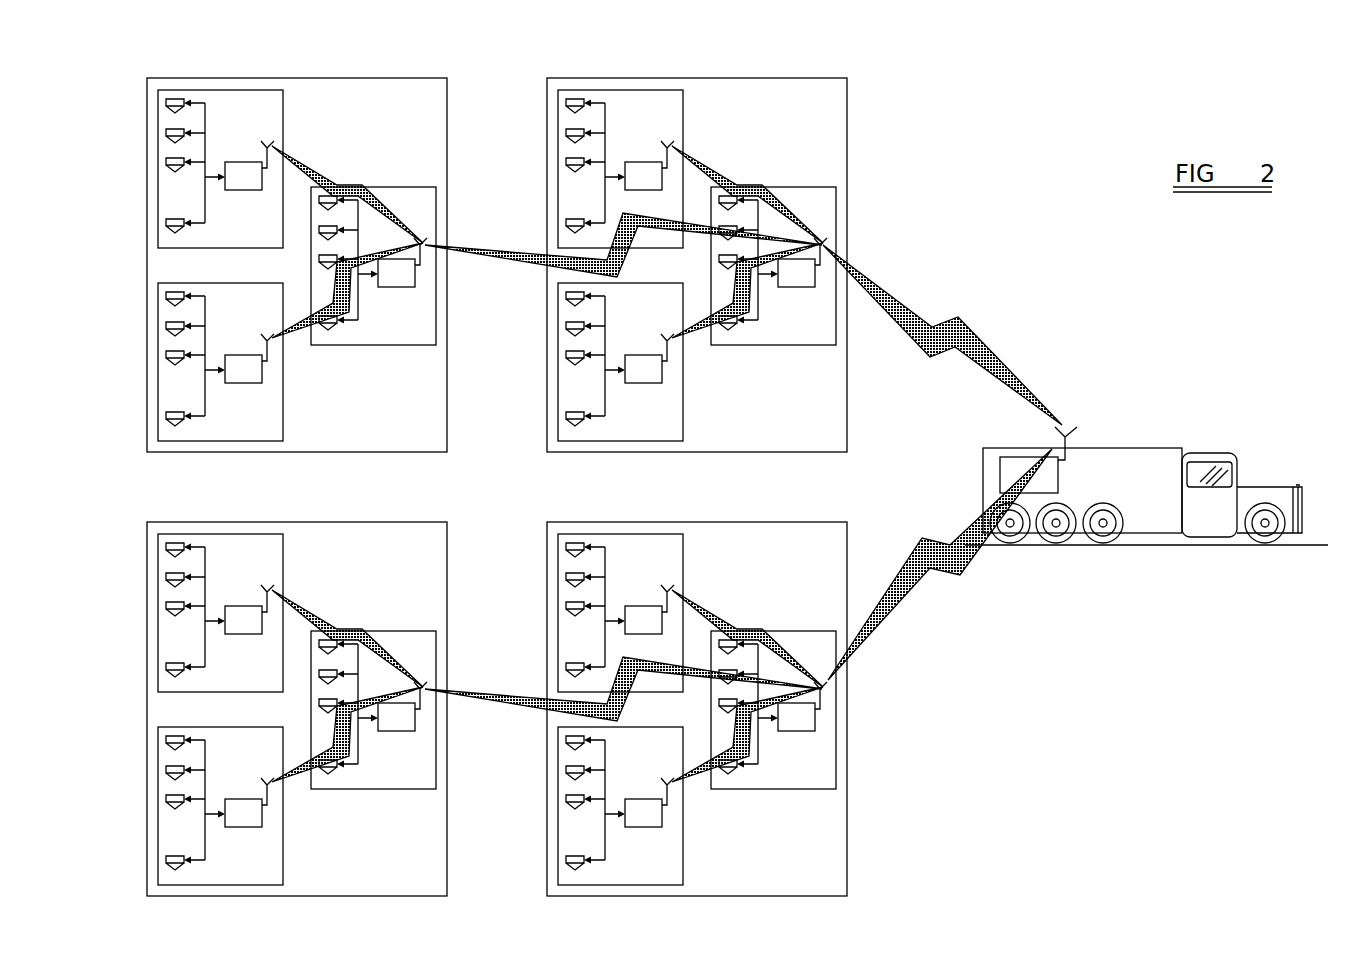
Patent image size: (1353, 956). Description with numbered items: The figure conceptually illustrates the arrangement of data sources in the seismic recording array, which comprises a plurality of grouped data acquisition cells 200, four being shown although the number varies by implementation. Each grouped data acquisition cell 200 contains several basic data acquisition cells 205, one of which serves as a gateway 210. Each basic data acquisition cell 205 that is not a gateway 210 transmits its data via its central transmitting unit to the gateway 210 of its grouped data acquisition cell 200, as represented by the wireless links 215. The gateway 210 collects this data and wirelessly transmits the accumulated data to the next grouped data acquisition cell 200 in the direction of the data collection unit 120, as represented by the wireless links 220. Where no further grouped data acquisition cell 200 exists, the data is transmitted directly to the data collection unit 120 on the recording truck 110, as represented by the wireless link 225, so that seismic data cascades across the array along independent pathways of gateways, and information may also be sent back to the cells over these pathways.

The recording truck 110 is at (1232, 438).
The data collection unit 120 is at (1060, 482).
The grouped data acquisition cell 200 is at (447, 105).
The basic data acquisition cell 205 is at (237, 90).
The gateway 210 is at (437, 198).
The wireless link 215 is at (350, 182).
The wireless link 220 is at (500, 263).
The wireless link 225 is at (912, 312).